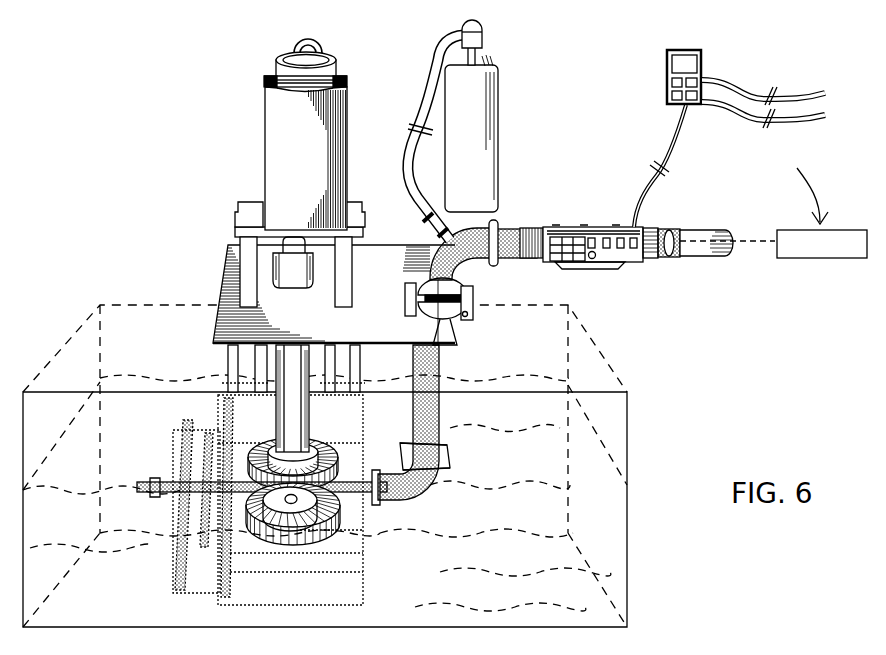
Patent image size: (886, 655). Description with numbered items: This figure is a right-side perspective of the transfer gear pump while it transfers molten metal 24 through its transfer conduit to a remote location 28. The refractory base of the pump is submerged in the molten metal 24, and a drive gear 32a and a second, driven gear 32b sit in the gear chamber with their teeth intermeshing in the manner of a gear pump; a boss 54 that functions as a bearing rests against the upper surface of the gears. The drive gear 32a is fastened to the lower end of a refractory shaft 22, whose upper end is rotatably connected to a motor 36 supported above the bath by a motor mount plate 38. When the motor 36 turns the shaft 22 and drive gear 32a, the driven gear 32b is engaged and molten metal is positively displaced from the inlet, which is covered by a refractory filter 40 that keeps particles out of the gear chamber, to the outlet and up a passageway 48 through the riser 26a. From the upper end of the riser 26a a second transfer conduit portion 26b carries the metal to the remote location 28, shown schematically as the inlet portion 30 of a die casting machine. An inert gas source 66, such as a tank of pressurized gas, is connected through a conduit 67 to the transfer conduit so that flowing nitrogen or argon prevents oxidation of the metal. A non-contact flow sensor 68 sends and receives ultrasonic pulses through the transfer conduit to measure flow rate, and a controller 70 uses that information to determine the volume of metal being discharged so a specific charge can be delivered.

The refractory shaft 22 is at (275, 381).
The molten metal 24 is at (595, 502).
The riser 26a is at (458, 369).
The second transfer conduit portion 26b is at (512, 230).
The remote location 28 is at (798, 183).
The inlet portion 30 is at (827, 248).
The drive gear 32a is at (320, 462).
The driven gear 32b is at (338, 520).
The motor 36 is at (284, 166).
The motor mount plate 38 is at (230, 293).
The filter 40 is at (173, 485).
The passageway 48 is at (440, 417).
The boss 54 is at (273, 443).
The inert gas source 66 is at (478, 102).
The conduit 67 is at (405, 173).
The non-contact flow sensor 68 is at (634, 253).
The controller 70 is at (701, 70).